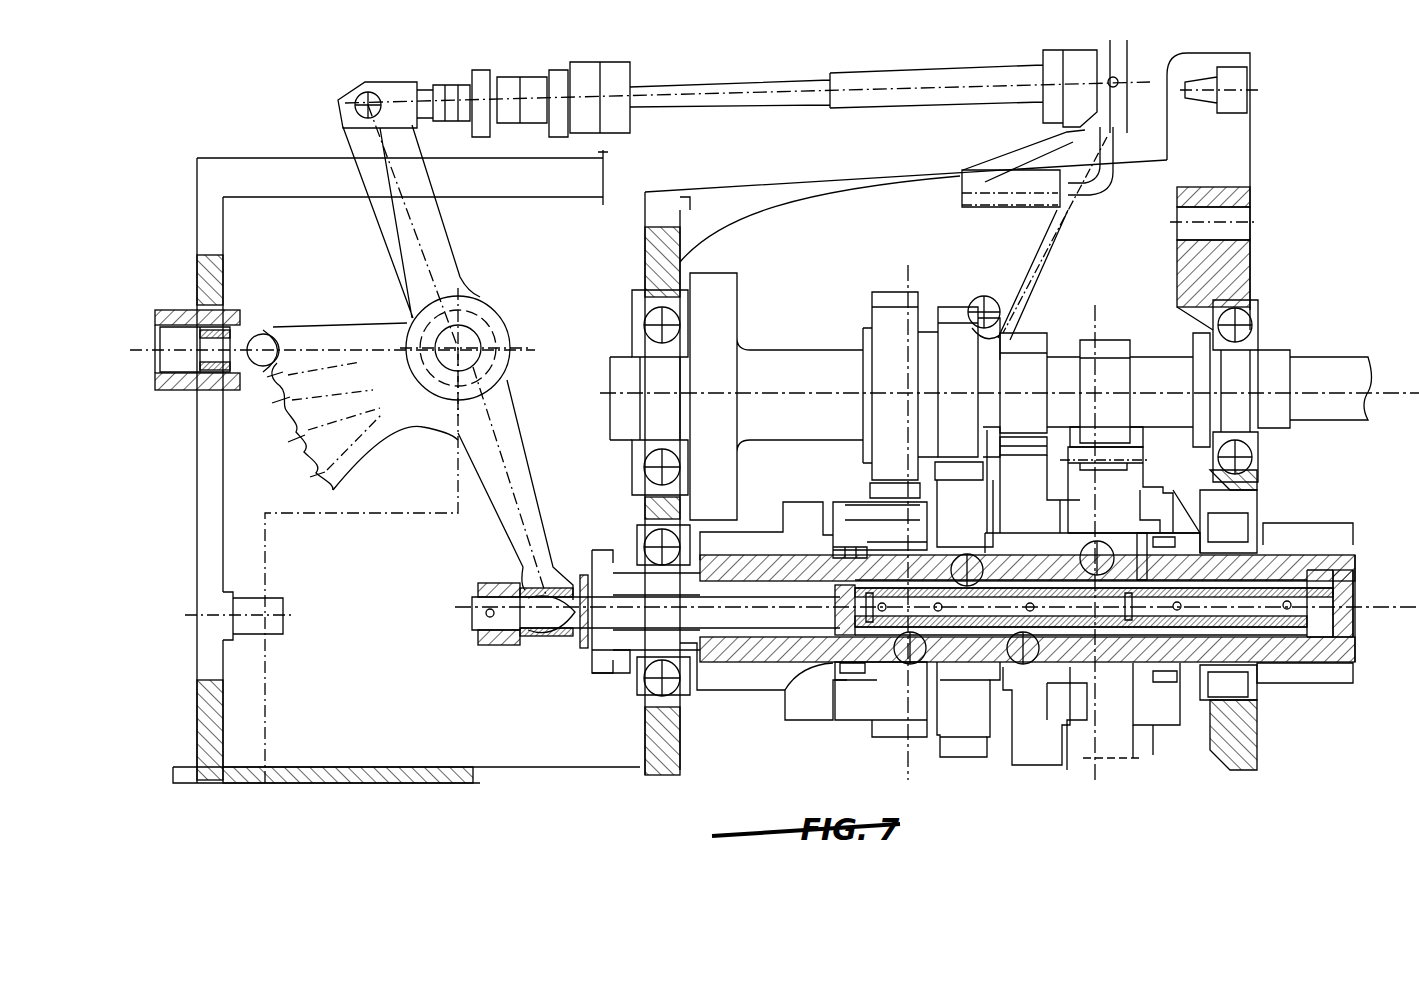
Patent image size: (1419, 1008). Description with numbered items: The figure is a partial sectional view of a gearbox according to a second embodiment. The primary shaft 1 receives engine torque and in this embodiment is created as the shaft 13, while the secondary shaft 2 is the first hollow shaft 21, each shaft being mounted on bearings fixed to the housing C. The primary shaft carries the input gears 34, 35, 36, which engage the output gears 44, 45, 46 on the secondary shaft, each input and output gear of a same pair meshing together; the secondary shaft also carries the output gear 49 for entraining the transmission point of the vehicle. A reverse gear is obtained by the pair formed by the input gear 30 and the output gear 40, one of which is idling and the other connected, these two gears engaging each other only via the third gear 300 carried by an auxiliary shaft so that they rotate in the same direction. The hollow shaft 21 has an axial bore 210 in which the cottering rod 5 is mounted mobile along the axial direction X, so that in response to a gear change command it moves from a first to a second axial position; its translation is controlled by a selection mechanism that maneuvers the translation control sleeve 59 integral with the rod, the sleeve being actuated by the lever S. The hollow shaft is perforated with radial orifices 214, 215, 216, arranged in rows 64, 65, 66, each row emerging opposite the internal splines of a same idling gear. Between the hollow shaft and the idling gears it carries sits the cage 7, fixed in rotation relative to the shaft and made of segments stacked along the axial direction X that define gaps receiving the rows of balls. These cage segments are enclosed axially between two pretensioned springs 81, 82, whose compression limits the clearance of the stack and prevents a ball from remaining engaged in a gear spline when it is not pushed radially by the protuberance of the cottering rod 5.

The primary shaft 1 is at (1313, 337).
The secondary shaft 2 is at (1297, 508).
The cottering rod 5 is at (590, 622).
The cage 7 is at (1050, 700).
The shaft 13 is at (1335, 365).
The first hollow shaft 21 is at (736, 665).
The input gear 30 is at (1107, 340).
The input gear 34 is at (905, 290).
The input gear 35 is at (947, 310).
The input gear 36 is at (1037, 333).
The output gear 40 is at (1125, 748).
The output gear 44 is at (895, 732).
The output gear 45 is at (965, 752).
The output gear 46 is at (1030, 765).
The output gear 49 is at (1327, 680).
The translation control sleeve 59 is at (493, 648).
The row of orifices 64 is at (905, 650).
The row of orifices 65 is at (963, 565).
The row of orifices 66 is at (1023, 660).
The pretensioned spring 81 is at (847, 542).
The pretensioned spring 82 is at (1160, 682).
The axial bore 210 is at (1270, 705).
The radial orifice 214 is at (817, 660).
The radial orifice 215 is at (1003, 547).
The radial orifice 216 is at (968, 660).
The third gear 300 is at (1150, 460).
The selector lever S is at (475, 525).
The housing C is at (740, 192).
The axial direction X is at (1390, 602).